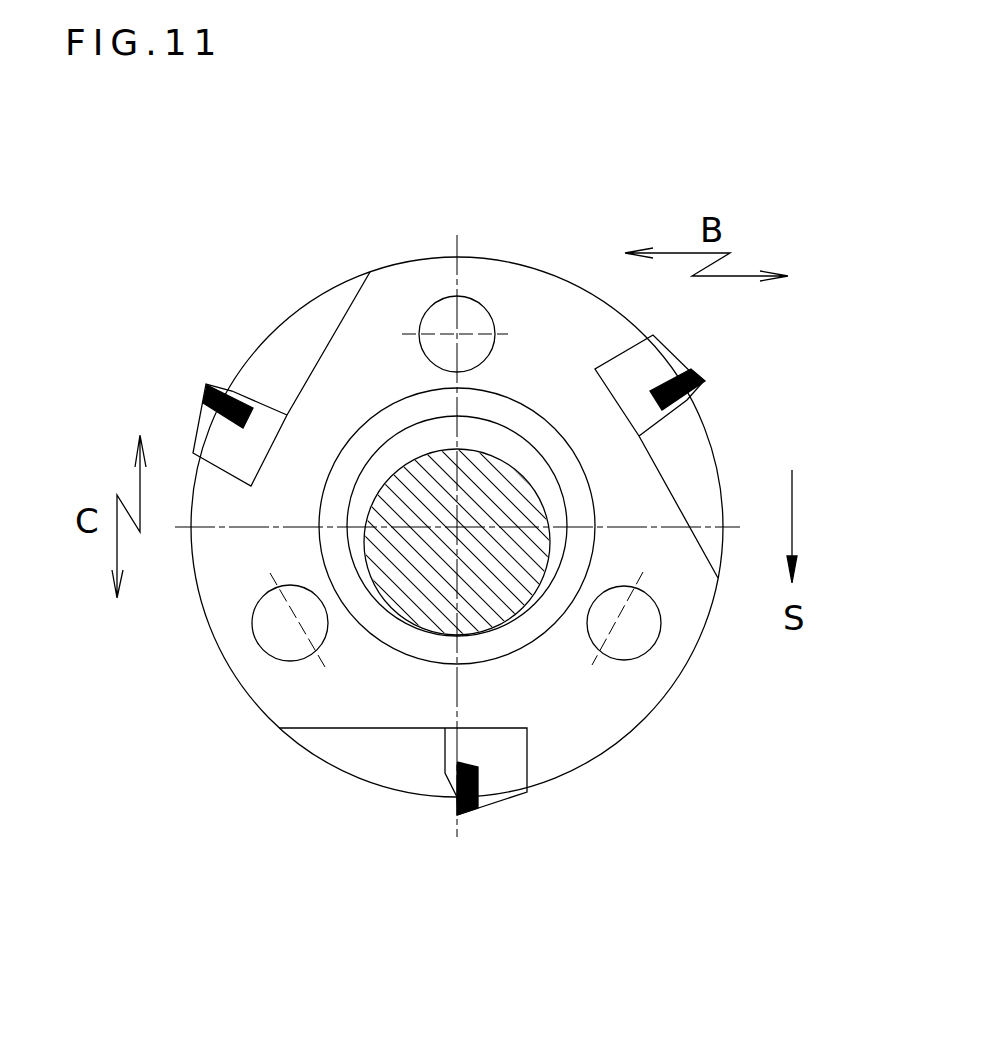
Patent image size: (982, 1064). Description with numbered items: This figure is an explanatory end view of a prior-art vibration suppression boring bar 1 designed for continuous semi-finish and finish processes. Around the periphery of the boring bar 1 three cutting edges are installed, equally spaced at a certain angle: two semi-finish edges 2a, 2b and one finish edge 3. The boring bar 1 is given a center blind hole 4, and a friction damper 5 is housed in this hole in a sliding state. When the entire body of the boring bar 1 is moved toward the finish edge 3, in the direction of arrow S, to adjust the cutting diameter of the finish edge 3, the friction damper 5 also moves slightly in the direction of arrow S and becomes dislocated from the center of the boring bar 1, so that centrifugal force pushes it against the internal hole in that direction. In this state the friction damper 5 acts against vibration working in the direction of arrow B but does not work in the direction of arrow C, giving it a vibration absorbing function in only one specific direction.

The boring bar 1 is at (542, 141).
The semi-finish edge 2a is at (697, 375).
The semi-finish edge 2b is at (225, 392).
The finish edge 3 is at (478, 787).
The center blind hole 4 is at (474, 420).
The friction damper 5 is at (430, 587).